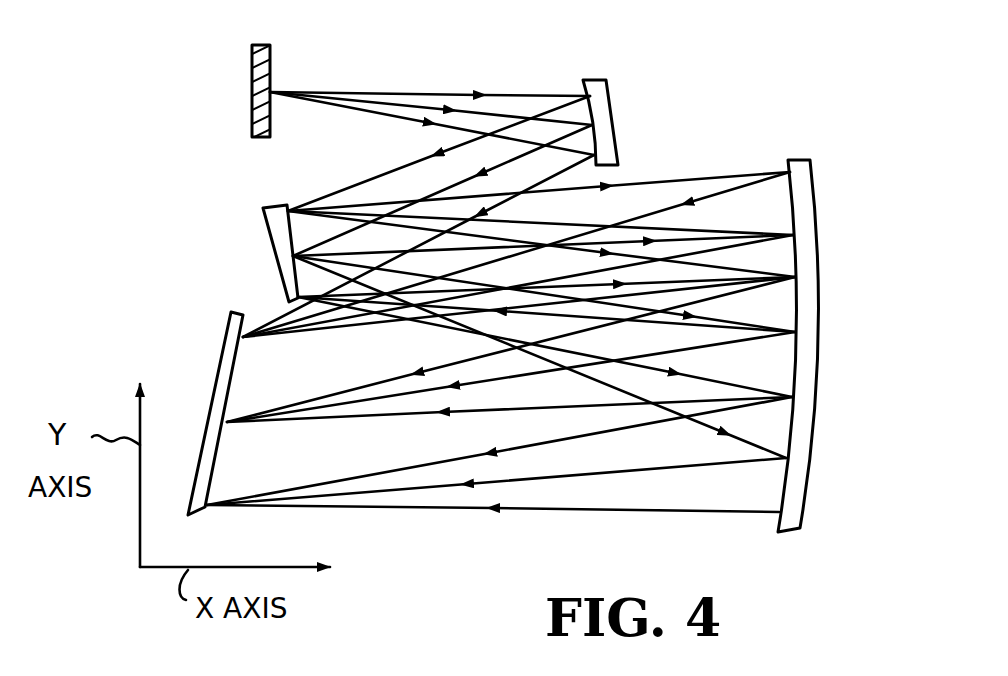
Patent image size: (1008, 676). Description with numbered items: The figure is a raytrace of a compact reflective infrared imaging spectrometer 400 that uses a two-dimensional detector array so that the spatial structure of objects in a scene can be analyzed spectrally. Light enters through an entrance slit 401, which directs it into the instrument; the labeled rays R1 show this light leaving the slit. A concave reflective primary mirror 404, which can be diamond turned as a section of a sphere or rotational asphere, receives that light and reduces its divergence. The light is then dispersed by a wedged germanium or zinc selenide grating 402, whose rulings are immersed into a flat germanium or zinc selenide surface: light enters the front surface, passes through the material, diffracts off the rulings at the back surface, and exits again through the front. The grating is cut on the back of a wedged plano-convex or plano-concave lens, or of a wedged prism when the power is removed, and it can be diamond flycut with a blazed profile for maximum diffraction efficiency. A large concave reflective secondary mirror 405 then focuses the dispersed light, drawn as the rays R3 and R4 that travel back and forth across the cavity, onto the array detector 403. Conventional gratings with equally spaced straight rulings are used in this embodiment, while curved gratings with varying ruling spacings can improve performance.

The compact imaging spectrometer 400 is at (752, 82).
The entrance slit 401 is at (252, 75).
The germanium or zinc selenide grating 402 is at (265, 238).
The array detector 403 is at (228, 355).
The concave mirror 404 is at (612, 100).
The concave mirror 405 is at (812, 185).
The first ray bundle R1 is at (398, 92).
The third ray bundle R3 is at (710, 172).
The fourth ray bundle R4 is at (590, 512).